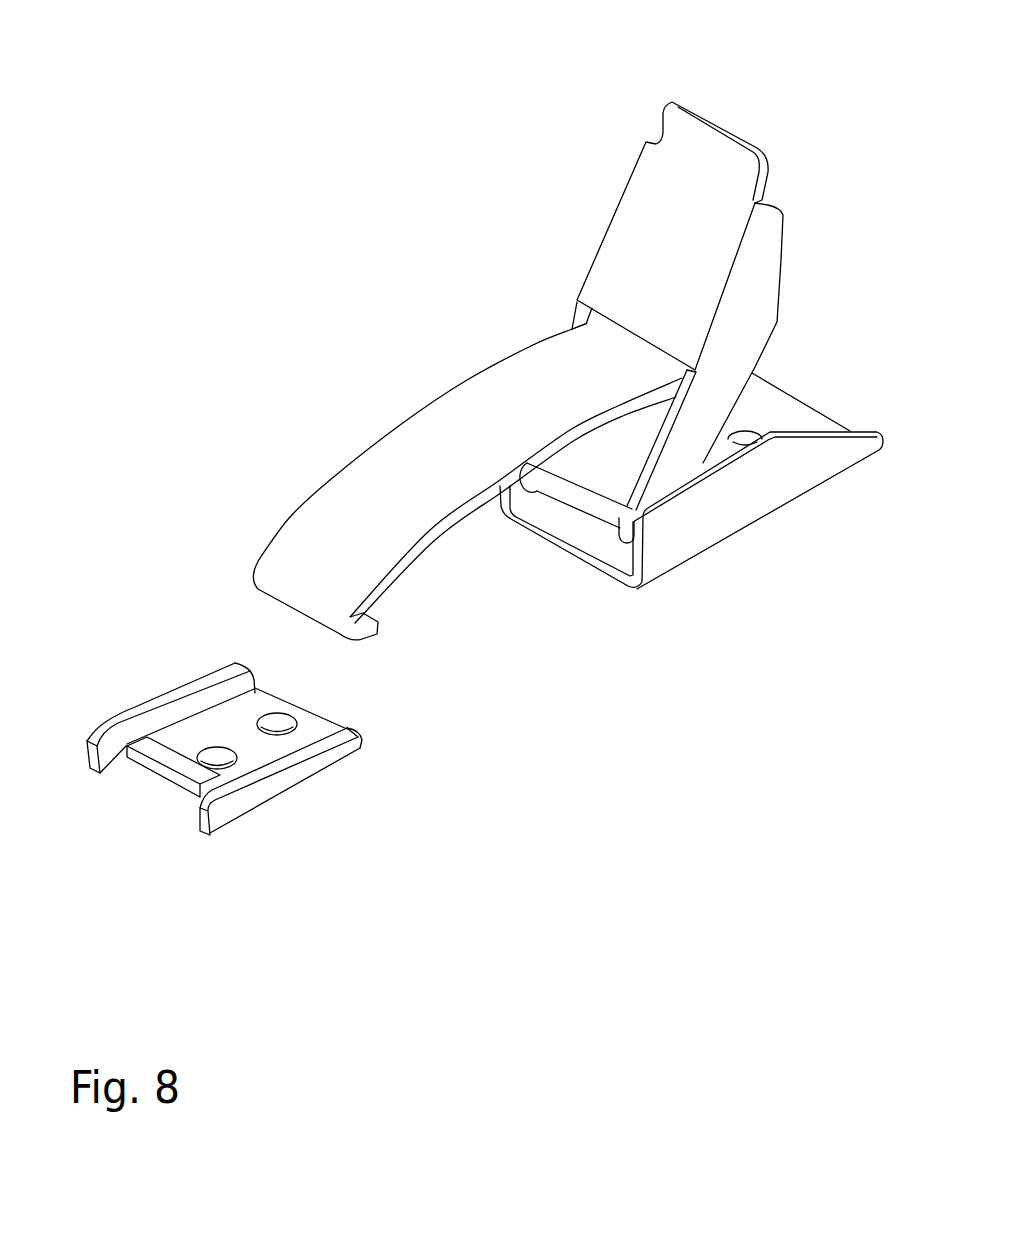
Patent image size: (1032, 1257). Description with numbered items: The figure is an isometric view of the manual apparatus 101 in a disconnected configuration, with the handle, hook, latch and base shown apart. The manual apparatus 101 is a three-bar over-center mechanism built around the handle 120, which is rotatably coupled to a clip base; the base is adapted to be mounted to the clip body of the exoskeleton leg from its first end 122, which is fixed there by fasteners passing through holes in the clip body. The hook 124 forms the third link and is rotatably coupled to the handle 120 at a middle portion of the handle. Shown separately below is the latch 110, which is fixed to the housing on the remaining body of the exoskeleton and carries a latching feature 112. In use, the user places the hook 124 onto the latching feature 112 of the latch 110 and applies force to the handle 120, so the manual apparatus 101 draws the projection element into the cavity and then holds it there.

The manual apparatus 101 is at (386, 212).
The latch 110 is at (313, 776).
The latching feature 112 is at (167, 770).
The handle 120 is at (727, 123).
The first end 122 is at (725, 541).
The hook 124 is at (306, 503).